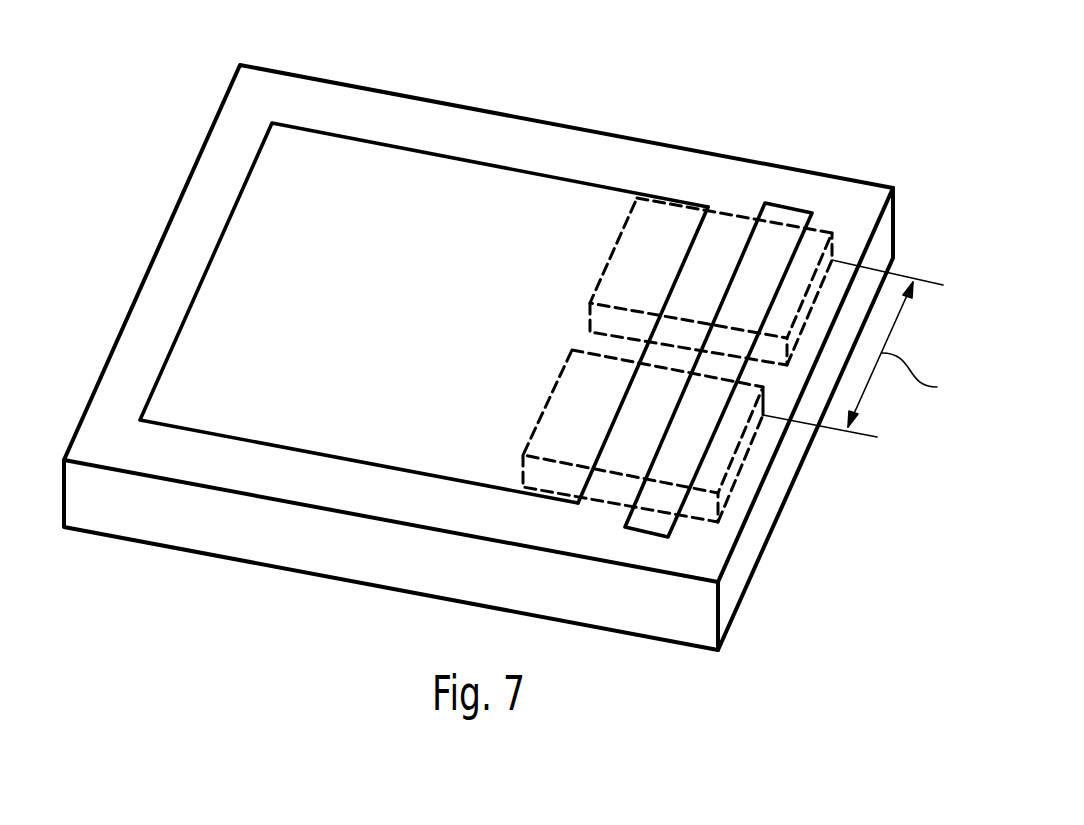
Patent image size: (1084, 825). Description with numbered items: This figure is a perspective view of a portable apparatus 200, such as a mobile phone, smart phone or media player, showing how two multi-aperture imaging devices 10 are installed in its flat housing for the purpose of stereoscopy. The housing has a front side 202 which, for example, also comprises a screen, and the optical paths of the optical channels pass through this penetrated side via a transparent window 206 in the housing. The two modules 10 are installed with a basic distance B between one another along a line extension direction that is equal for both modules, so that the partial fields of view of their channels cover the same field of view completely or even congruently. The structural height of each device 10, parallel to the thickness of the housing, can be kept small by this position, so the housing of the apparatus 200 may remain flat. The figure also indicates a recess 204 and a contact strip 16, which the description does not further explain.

The portable apparatus 200 is at (893, 60).
The front side 202 is at (130, 370).
The recess in carrier 204 is at (240, 190).
The contact strip 16 is at (727, 212).
The transparent window 206 is at (787, 203).
The multi-aperture imaging device 10 is at (740, 477).